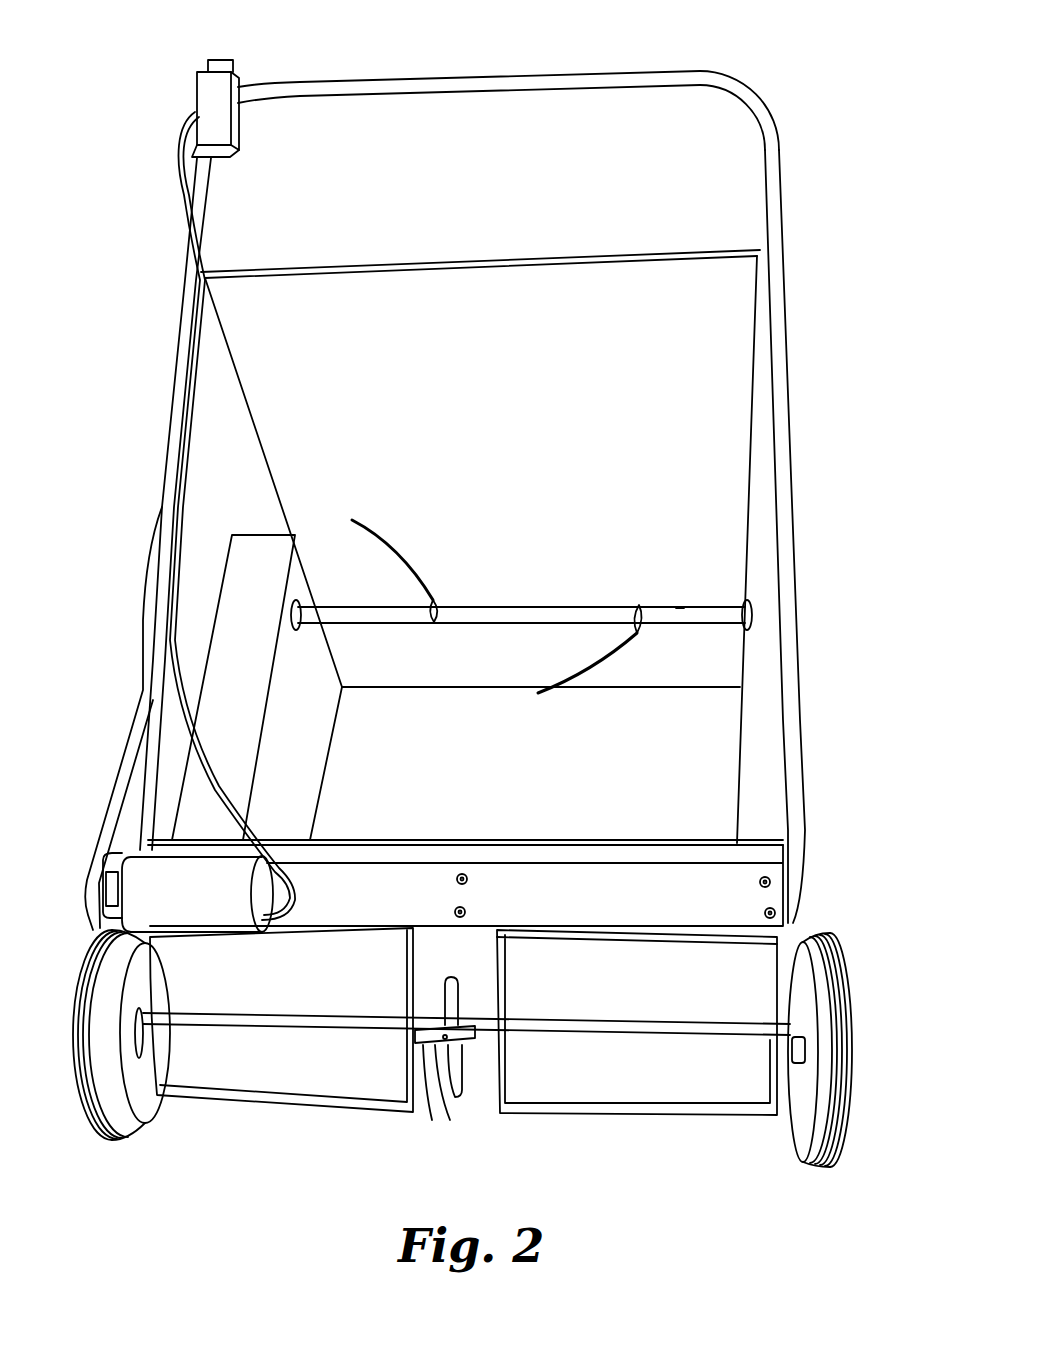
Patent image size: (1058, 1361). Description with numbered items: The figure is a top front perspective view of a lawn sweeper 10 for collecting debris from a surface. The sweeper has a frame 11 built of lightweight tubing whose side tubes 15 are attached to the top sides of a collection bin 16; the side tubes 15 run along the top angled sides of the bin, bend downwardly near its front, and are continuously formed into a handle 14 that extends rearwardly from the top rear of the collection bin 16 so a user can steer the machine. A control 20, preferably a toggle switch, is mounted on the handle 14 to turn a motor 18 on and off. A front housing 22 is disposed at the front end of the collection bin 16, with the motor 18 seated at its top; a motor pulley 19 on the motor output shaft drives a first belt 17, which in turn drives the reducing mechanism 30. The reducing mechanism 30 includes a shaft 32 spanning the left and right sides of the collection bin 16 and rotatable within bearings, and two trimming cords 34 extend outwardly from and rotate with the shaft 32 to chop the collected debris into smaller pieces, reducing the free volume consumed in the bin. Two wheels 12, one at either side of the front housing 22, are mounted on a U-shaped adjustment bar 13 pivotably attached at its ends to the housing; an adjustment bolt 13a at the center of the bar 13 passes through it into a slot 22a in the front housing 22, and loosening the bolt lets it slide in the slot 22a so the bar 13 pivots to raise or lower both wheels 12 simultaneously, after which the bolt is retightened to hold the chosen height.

The lawn sweeper 10 is at (792, 70).
The frame 11 is at (405, 75).
The wheel 12 is at (100, 1107).
The adjustment bar 13 is at (705, 1027).
The adjustment bolt 13a is at (424, 1048).
The handle 14 is at (542, 75).
The side tubes 15 is at (773, 362).
The collection bin 16 is at (722, 278).
The first belt 17 is at (108, 823).
The motor 18 is at (160, 887).
The motor pulley 19 is at (113, 857).
The control 20 is at (244, 93).
The front housing 22 is at (748, 953).
The slot 22a is at (447, 1047).
The reducing mechanism 30 is at (716, 600).
The shaft 32 is at (680, 607).
The trimming cord 34 is at (385, 543).